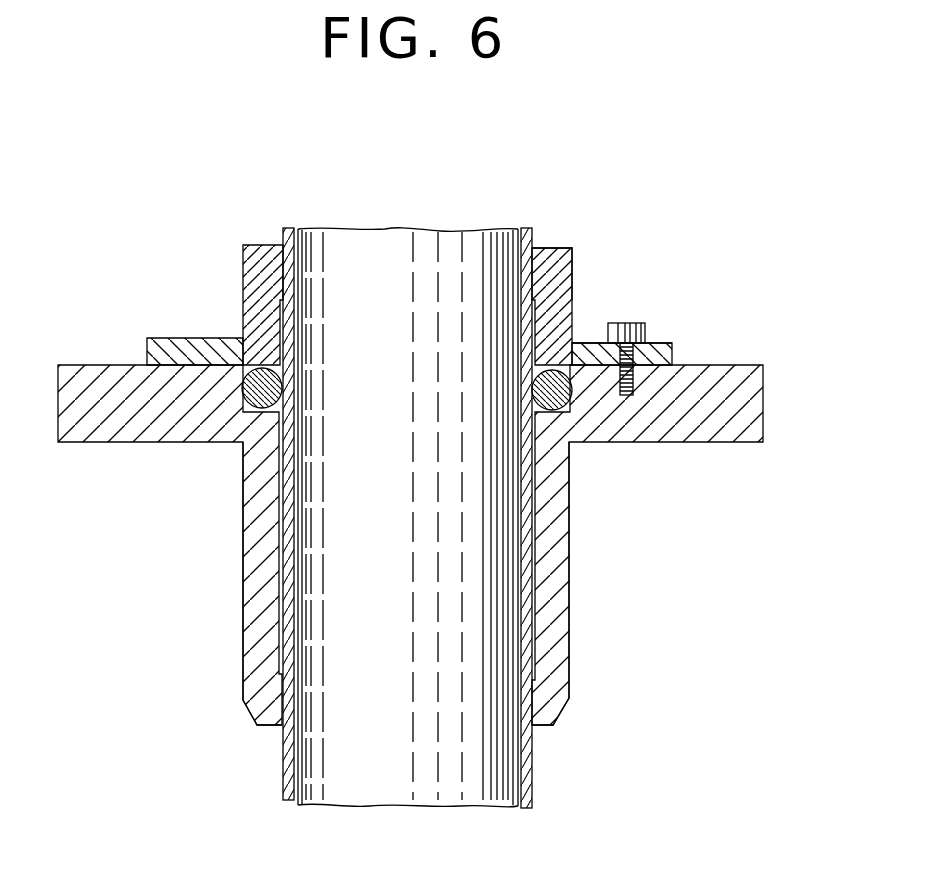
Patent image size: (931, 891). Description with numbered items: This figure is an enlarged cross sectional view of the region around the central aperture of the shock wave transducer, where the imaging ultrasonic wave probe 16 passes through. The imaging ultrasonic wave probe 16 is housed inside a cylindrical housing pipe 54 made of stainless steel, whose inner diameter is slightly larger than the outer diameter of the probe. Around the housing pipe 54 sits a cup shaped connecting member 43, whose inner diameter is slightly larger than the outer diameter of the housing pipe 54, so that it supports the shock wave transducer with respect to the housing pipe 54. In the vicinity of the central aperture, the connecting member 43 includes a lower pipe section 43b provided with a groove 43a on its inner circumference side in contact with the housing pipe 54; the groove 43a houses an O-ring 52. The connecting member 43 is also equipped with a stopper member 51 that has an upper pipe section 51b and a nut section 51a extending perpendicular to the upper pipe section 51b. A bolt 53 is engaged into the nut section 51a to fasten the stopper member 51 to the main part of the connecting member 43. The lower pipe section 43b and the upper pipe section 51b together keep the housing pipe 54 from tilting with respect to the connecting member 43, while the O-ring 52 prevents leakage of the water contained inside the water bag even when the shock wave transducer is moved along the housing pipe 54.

The imaging ultrasonic wave probe 16 is at (400, 228).
The connecting member 43 is at (735, 360).
The groove 43a is at (577, 398).
The lower pipe section 43b is at (570, 637).
The stopper member 51 is at (580, 288).
The nut section 51a is at (657, 368).
The upper pipe section 51b is at (567, 248).
The O-ring 52 is at (572, 348).
The bolt 53 is at (644, 325).
The housing pipe 54 is at (531, 762).